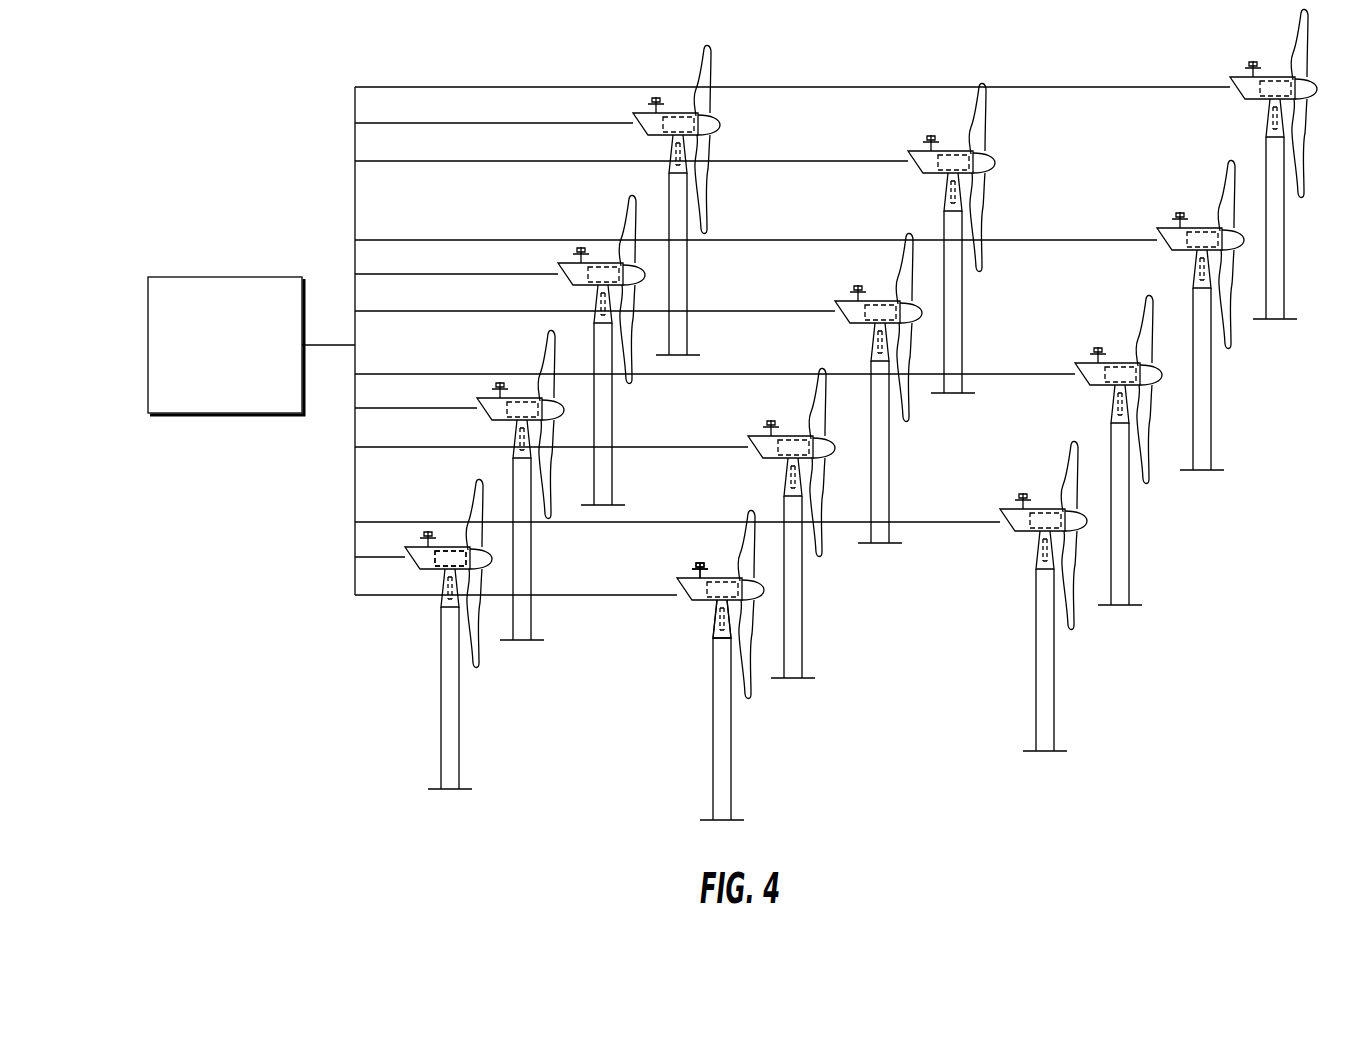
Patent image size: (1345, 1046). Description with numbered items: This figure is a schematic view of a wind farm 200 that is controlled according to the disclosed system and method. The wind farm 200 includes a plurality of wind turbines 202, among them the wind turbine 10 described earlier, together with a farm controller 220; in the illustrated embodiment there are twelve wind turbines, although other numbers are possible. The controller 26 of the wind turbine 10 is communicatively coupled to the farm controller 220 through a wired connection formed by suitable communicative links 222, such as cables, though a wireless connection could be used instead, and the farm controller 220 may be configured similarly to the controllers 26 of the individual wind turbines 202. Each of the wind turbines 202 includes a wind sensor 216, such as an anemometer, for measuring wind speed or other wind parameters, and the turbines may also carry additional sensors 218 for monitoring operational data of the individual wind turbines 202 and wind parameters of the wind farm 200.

The wind farm 200 is at (256, 144).
The farm controller 220 is at (242, 352).
The communicative links 222 is at (500, 161).
The wind turbine 10 is at (420, 630).
The controller 26 is at (453, 550).
The wind turbines 202 is at (897, 414).
The wind sensor 216 is at (682, 568).
The sensor 218 is at (710, 626).